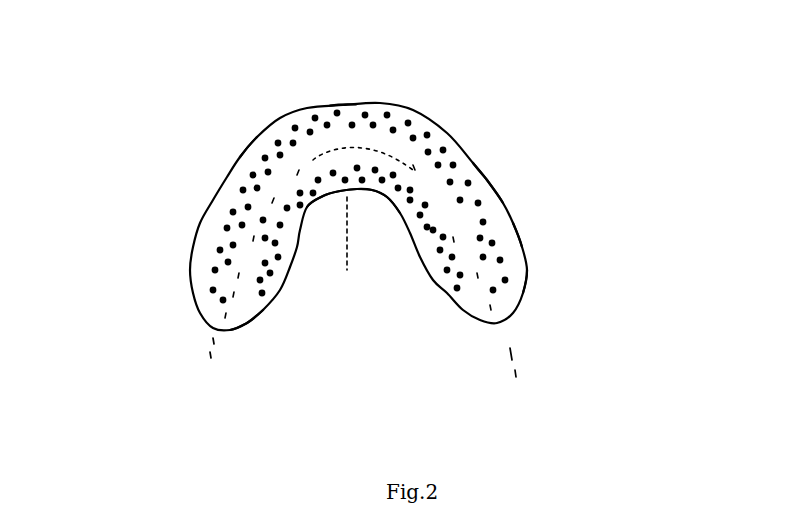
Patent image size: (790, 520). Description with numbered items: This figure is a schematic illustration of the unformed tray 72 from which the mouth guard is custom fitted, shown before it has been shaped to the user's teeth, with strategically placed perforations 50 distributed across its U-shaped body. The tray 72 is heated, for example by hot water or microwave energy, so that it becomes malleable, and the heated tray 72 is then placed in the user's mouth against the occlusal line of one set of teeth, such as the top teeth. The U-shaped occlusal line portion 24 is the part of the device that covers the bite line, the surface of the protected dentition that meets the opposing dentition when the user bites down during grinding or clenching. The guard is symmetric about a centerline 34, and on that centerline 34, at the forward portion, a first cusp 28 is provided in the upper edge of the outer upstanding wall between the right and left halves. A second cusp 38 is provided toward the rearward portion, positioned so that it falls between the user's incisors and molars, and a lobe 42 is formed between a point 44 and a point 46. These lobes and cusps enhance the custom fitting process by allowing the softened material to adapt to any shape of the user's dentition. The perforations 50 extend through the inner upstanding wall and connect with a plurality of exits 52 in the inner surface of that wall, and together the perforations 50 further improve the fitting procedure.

The occlusal line portion 24 is at (520, 353).
The first cusp 28 is at (345, 104).
The centerline 34 is at (343, 77).
The second cusp 38 is at (228, 175).
The lobe 42 is at (504, 243).
The point 44 is at (491, 186).
The point 46 is at (529, 290).
The perforations 50 is at (418, 230).
The exits 52 is at (213, 222).
The tray 72 is at (278, 292).